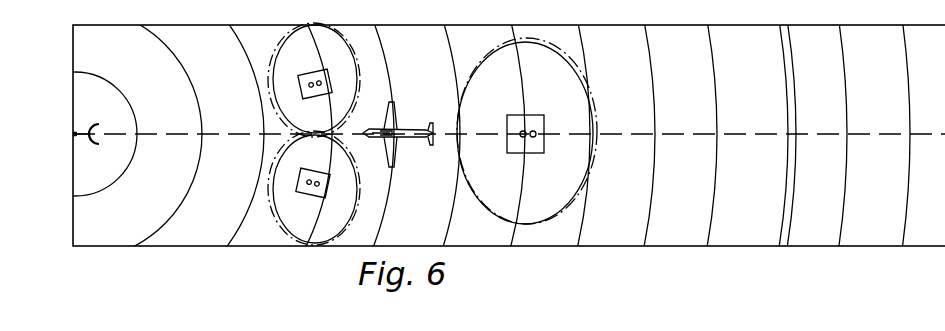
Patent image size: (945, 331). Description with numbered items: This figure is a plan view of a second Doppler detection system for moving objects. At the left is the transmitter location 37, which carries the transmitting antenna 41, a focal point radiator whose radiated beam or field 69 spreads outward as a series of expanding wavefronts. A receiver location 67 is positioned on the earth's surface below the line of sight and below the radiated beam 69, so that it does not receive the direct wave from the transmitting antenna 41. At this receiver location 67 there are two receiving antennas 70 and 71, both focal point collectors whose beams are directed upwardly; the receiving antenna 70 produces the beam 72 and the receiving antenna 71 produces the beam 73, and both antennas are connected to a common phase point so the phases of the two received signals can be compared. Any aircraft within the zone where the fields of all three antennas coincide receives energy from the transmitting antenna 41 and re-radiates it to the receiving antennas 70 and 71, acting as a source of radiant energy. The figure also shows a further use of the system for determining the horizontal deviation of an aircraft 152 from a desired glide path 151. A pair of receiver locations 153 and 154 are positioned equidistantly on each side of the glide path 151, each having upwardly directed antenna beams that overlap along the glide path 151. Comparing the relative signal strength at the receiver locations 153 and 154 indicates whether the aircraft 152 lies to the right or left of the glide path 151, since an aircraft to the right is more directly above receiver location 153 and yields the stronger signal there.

The transmitter location 37 is at (73, 135).
The transmitting antenna 41 is at (93, 125).
The glide path 151 is at (227, 135).
The aircraft 152 is at (393, 118).
The receiver location 153 is at (313, 72).
The receiver location 154 is at (312, 197).
The beam 72 is at (491, 52).
The beam 73 is at (573, 60).
The receiver location 67 is at (545, 120).
The receiving antenna 70 is at (523, 131).
The receiving antenna 71 is at (533, 137).
The radiated beam 69 is at (796, 107).